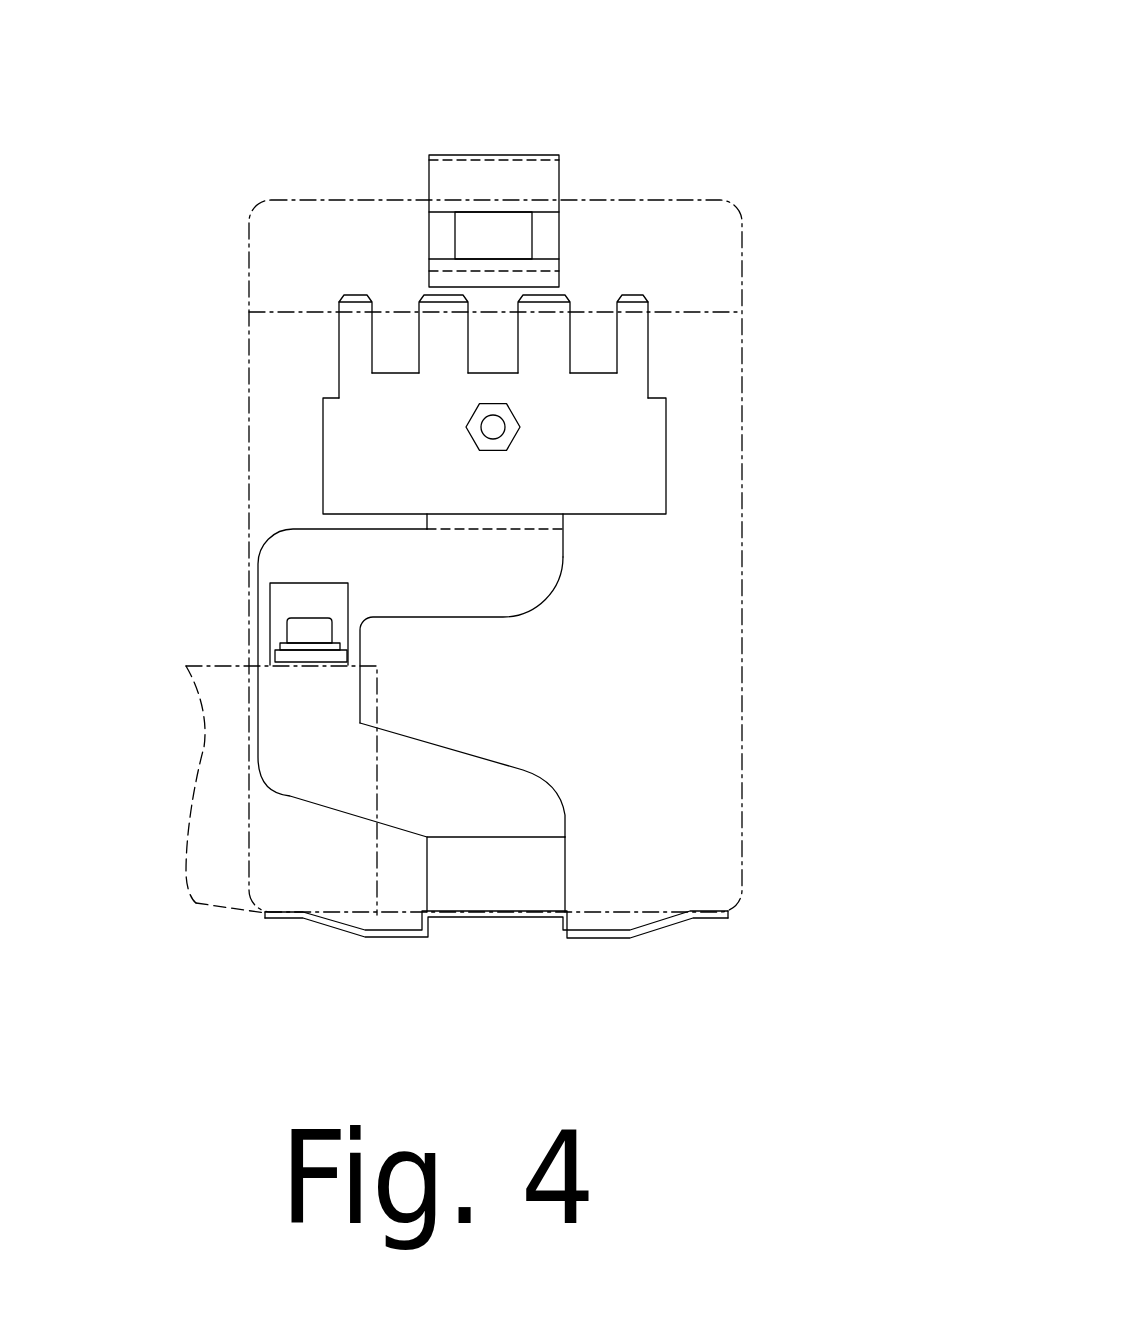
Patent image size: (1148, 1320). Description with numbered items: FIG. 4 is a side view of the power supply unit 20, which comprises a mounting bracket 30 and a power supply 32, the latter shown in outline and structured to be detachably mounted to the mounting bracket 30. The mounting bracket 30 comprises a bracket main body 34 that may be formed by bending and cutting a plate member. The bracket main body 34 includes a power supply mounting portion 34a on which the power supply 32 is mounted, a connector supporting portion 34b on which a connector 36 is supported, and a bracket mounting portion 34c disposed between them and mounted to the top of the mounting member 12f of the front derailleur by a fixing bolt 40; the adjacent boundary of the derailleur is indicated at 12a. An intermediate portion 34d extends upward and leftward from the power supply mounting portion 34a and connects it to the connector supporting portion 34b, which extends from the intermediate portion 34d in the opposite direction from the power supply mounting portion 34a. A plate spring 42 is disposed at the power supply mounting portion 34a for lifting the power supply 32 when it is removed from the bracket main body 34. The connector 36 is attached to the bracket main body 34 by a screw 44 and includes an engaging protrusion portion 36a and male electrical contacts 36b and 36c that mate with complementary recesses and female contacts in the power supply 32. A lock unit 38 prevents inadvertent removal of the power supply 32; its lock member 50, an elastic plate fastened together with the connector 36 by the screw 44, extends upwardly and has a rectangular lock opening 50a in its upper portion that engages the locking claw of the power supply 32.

The inner surface of case 12a is at (206, 660).
The mounting member 12f is at (226, 914).
The power supply unit 20 is at (716, 139).
The mounting bracket 30 is at (580, 594).
The power supply 32 is at (744, 228).
The bracket main body 34 is at (545, 610).
The power supply mounting portion 34a is at (473, 927).
The connector supporting portion 34b is at (558, 526).
The bracket mounting portion 34c is at (332, 657).
The intermediate portion 34d is at (527, 783).
The connector 36 is at (672, 450).
The engaging protrusion portion 36a is at (638, 330).
The male electrical contact 36b is at (405, 322).
The male electrical contact 36c is at (587, 322).
The lock unit 38 is at (541, 96).
The fixing bolt 40 is at (320, 623).
The plate spring 42 is at (600, 936).
The screw 44 is at (500, 428).
The lock member 50 is at (484, 154).
The lock opening 50a is at (468, 214).